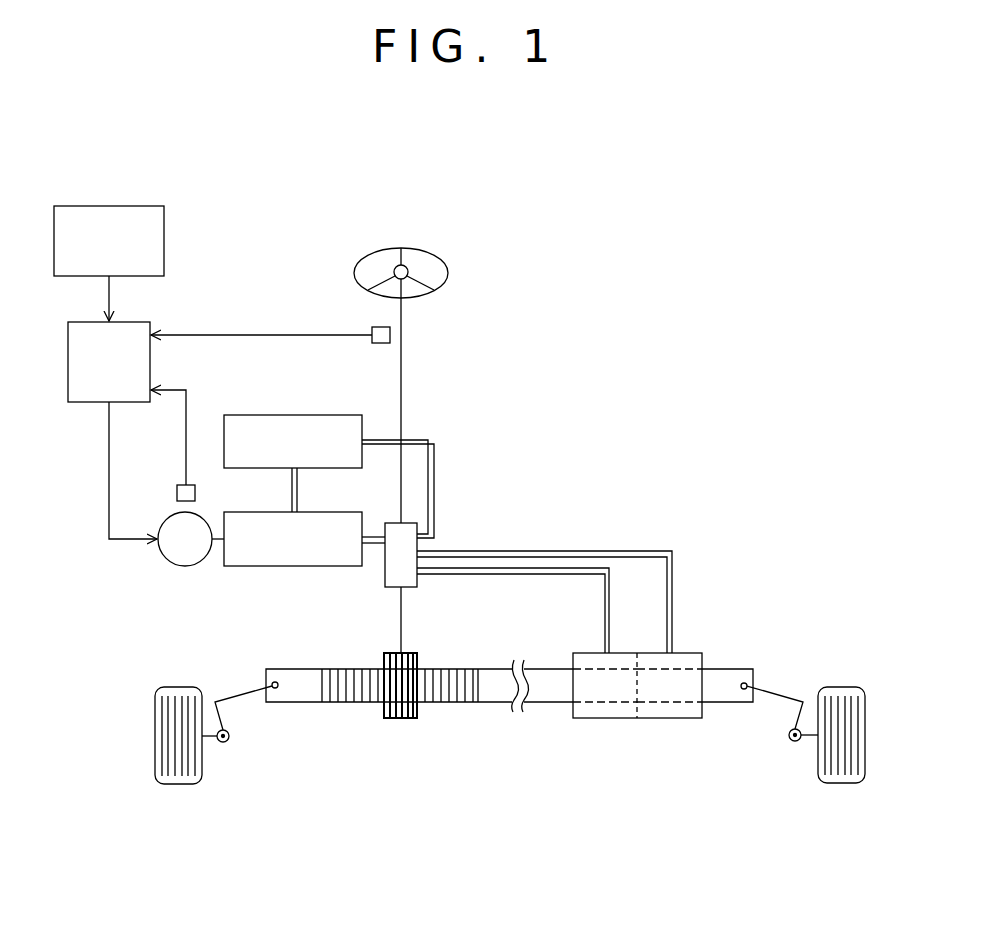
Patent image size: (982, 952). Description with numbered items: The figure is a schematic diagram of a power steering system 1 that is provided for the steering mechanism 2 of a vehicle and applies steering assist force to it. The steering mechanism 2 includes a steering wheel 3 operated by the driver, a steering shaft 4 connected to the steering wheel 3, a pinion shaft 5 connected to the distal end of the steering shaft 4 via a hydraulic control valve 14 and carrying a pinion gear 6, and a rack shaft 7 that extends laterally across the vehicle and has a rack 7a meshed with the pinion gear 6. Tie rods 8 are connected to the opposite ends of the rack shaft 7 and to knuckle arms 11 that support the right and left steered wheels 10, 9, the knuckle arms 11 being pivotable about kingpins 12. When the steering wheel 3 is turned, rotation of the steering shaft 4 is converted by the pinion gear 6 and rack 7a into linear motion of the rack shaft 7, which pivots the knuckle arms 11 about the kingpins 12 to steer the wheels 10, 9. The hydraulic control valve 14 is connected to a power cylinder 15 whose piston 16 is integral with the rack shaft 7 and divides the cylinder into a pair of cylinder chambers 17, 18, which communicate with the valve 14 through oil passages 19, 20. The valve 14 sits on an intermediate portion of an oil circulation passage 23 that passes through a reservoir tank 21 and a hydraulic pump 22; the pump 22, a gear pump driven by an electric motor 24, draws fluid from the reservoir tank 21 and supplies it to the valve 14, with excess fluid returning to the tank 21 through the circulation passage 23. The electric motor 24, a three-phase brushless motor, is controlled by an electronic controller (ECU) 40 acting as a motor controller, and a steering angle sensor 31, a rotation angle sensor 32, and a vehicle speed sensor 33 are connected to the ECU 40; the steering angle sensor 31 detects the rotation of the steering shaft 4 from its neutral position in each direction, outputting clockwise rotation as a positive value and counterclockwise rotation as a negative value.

The power steering system 1 is at (440, 247).
The steering mechanism 2 is at (540, 708).
The steering wheel 3 is at (448, 271).
The steering shaft 4 is at (402, 323).
The pinion shaft 5 is at (402, 623).
The pinion gear 6 is at (400, 718).
The rack shaft 7 is at (492, 702).
The rack 7a is at (348, 702).
The tie rods 8 is at (240, 693).
The left steered wheel 9 is at (178, 784).
The right steered wheel 10 is at (840, 783).
The knuckle arms 11 is at (226, 742).
The kingpins 12 is at (232, 736).
The hydraulic control valve 14 is at (385, 565).
The power cylinder 15 is at (690, 653).
The piston 16 is at (643, 702).
The cylinder chamber 17 is at (598, 718).
The cylinder chamber 18 is at (680, 718).
The oil passage 19 is at (540, 574).
The oil passage 20 is at (556, 551).
The reservoir tank 21 is at (290, 415).
The hydraulic pump 22 is at (292, 566).
The oil circulation passage 23 is at (434, 488).
The electric motor 24 is at (181, 566).
The steering angle sensor 31 is at (380, 343).
The rotation angle sensor 32 is at (177, 489).
The vehicle speed sensor 33 is at (164, 243).
The electronic controller (ECU) 40 is at (128, 322).